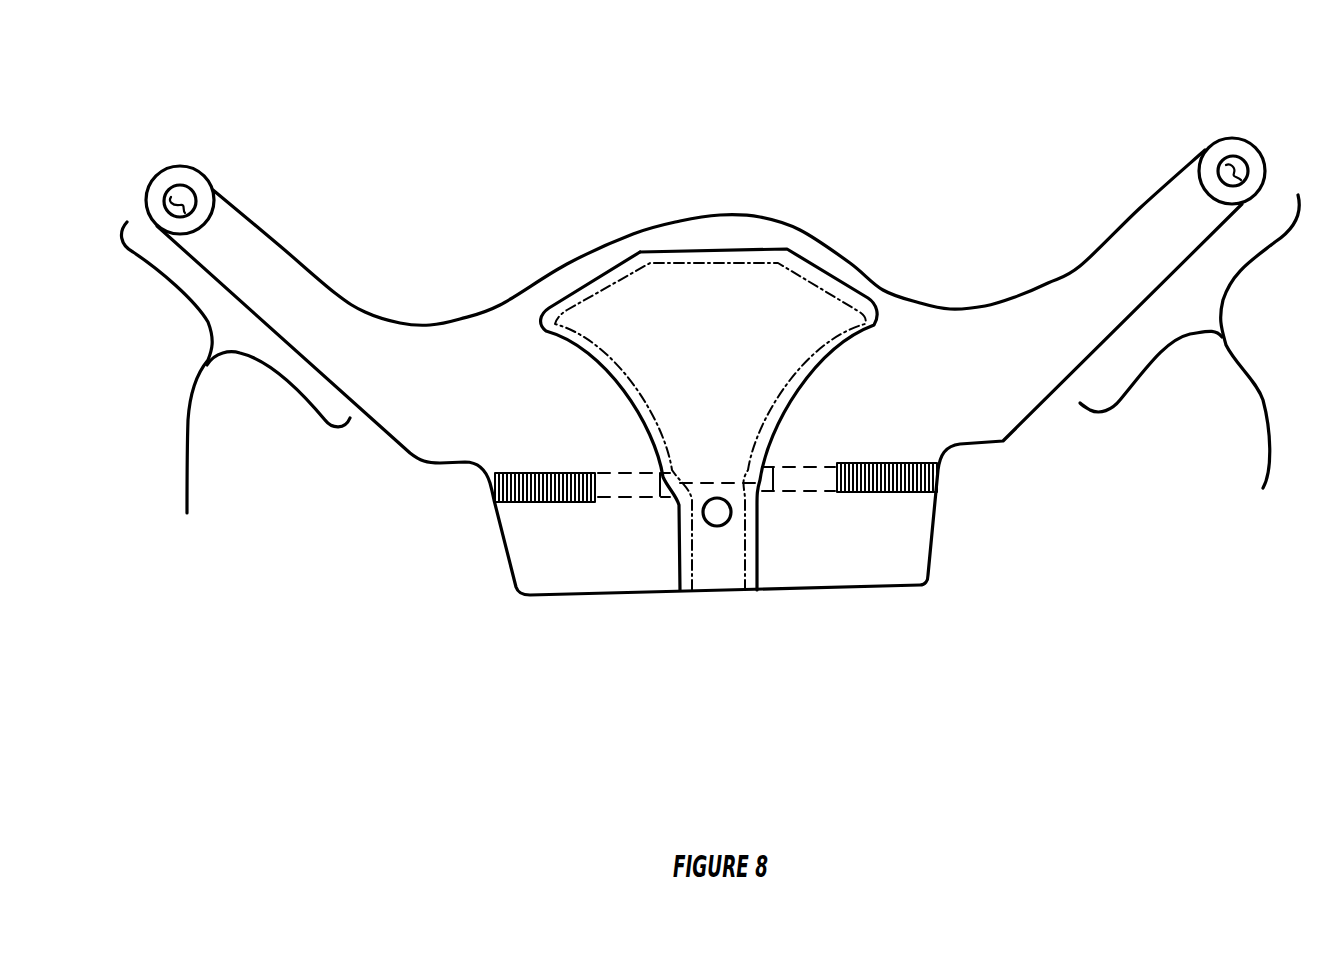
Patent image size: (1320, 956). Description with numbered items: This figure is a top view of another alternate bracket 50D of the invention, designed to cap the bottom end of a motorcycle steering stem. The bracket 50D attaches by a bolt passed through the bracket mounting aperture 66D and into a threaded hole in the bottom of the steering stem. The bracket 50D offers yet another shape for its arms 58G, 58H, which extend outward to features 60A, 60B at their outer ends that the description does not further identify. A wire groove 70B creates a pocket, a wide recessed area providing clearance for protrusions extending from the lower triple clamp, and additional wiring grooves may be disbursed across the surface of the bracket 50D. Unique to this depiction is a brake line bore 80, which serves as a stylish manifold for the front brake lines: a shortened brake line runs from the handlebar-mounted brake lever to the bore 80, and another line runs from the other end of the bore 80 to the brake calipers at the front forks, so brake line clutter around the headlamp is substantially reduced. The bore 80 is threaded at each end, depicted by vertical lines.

The bracket 50D is at (905, 147).
The left pivot 60A is at (200, 197).
The right pivot 60B is at (1220, 173).
The wire groove 70B is at (722, 382).
The brake line bore 80 is at (485, 483).
The bracket mounting aperture 66D is at (715, 552).
The arm 58G is at (187, 513).
The arm 58H is at (1263, 488).